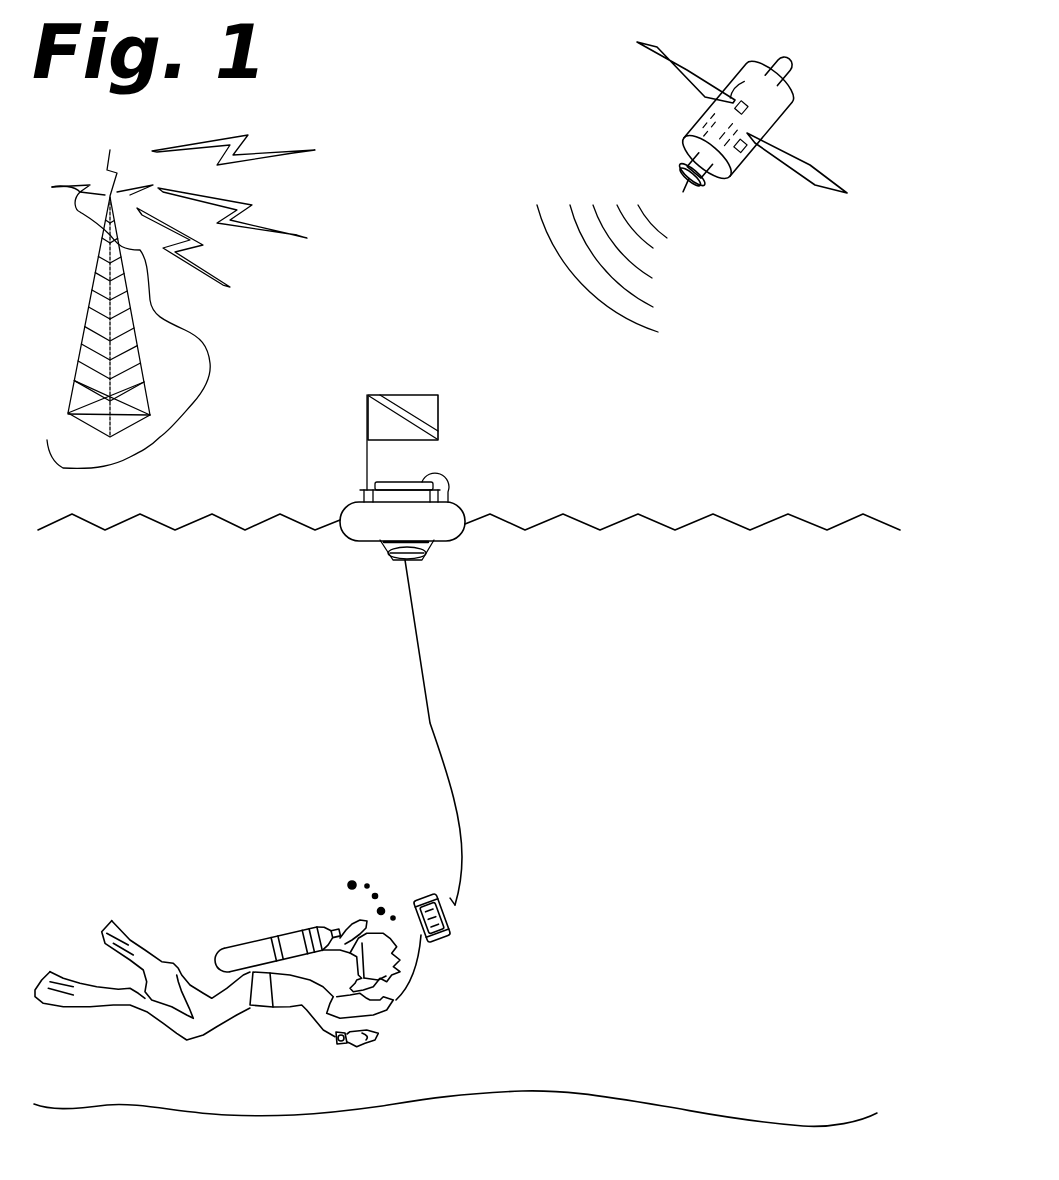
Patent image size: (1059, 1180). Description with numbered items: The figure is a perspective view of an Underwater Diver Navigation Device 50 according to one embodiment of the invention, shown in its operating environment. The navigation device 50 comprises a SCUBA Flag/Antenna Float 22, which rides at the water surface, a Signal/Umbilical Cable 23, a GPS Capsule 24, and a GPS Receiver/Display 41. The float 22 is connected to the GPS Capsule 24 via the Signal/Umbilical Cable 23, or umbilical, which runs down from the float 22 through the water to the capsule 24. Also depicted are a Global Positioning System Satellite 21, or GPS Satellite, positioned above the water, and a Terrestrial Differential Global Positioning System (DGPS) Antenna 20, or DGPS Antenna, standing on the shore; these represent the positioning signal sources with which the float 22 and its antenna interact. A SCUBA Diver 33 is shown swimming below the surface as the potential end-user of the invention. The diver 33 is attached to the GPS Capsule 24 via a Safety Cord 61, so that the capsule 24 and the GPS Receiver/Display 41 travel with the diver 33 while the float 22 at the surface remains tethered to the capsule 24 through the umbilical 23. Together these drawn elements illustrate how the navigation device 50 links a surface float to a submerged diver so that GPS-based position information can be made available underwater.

The Terrestrial Differential Global Positioning System (DGPS) Antenna 20 is at (140, 357).
The Global Positioning System Satellite 21 is at (697, 120).
The SCUBA Flag/Antenna Float 22 is at (462, 507).
The Signal/Umbilical Cable 23 is at (430, 723).
The GPS Capsule 24 is at (437, 937).
The SCUBA Diver 33 is at (275, 937).
The GPS Receiver/Display 41 is at (443, 922).
The Underwater Diver Navigation Device 50 is at (610, 654).
The Safety Cord 61 is at (417, 977).